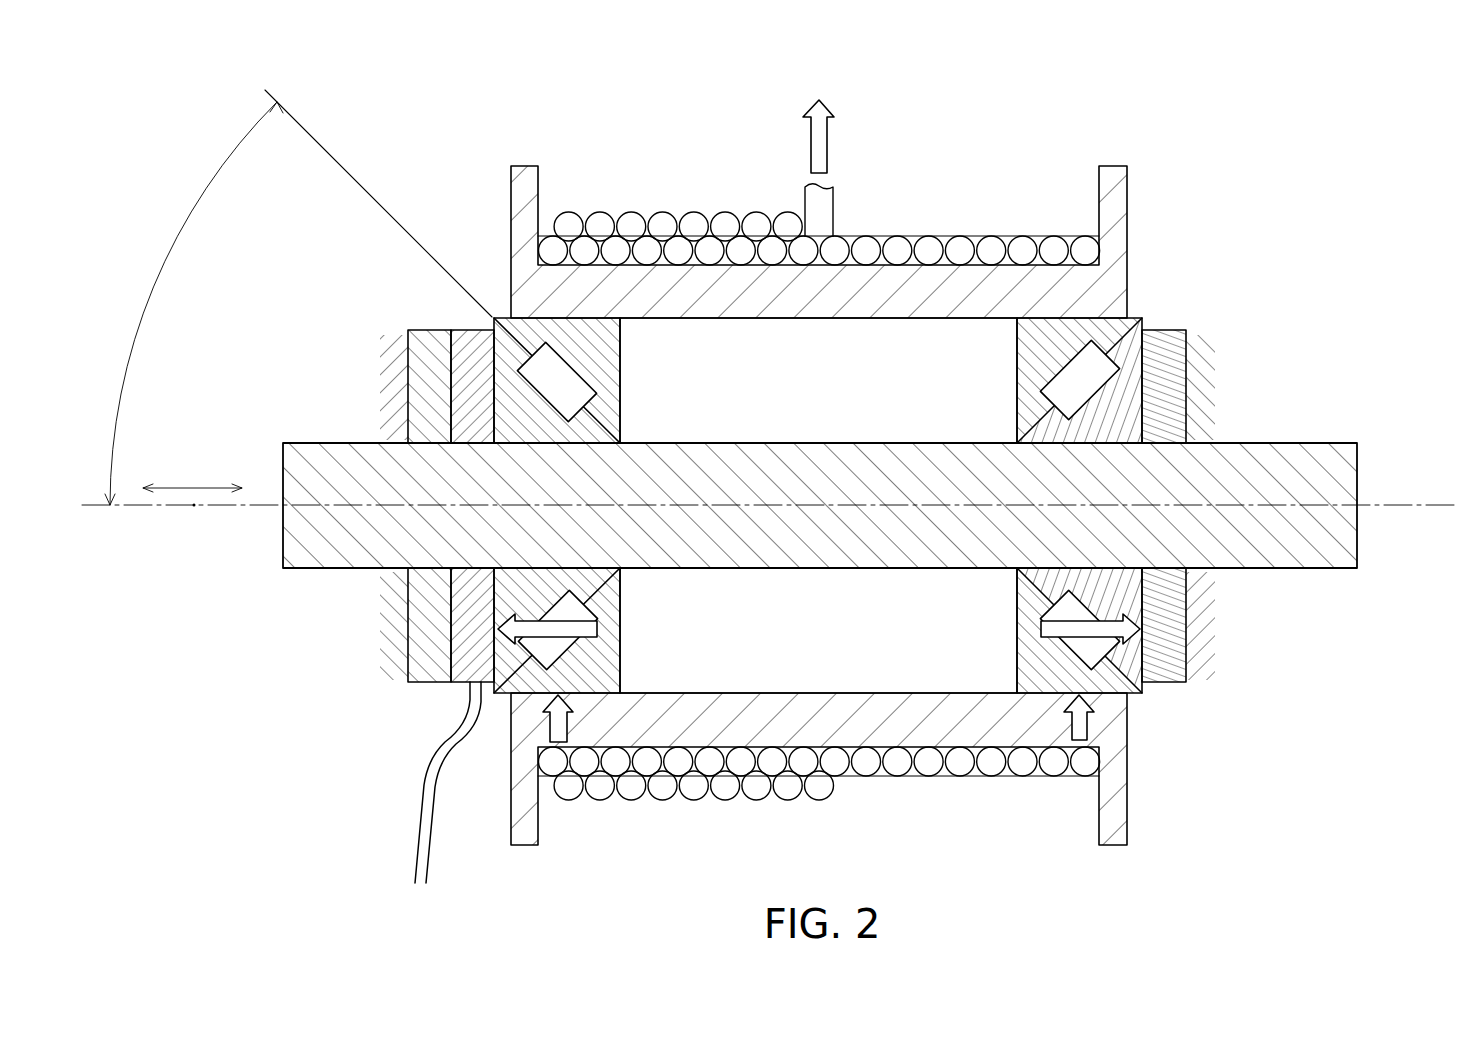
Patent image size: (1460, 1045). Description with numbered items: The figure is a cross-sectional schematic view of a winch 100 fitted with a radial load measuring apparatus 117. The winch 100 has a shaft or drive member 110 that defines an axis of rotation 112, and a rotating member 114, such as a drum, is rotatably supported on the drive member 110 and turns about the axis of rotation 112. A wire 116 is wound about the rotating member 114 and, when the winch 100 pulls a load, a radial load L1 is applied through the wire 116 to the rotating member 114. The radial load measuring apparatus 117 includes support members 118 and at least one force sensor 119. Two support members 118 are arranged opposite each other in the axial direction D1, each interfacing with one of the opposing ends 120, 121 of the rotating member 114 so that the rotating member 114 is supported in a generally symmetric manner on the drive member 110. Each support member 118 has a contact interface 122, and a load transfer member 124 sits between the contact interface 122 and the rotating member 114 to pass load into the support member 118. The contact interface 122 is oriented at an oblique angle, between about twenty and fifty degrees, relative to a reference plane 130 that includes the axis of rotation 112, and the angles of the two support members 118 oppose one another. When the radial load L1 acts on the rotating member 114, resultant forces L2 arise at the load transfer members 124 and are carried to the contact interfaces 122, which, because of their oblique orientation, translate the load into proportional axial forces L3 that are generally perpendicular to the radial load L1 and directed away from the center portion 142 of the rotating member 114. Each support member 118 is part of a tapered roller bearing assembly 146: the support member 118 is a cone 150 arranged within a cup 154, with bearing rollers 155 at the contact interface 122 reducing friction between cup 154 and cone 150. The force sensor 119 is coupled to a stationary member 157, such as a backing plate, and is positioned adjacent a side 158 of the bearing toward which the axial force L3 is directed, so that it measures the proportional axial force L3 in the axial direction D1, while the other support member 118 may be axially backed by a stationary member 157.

The winch 100 is at (768, 459).
The drive member 110 is at (1276, 443).
The axis of rotation 112 is at (1414, 505).
The rotating member 114 is at (869, 488).
The wire 116 is at (570, 222).
The radial load measuring apparatus 117 is at (1171, 308).
The support member 118 is at (768, 386).
The force sensor 119 is at (470, 340).
The end of the rotating member 120 is at (724, 436).
The end of the rotating member 121 is at (1137, 261).
The contact interface 122 is at (802, 473).
The load transfer member 124 is at (757, 380).
The reference plane 130 is at (194, 505).
The center portion 142 is at (825, 572).
The tapered roller bearing assembly 146 is at (660, 380).
The cone 150 is at (1020, 420).
The cup 154 is at (1020, 345).
The bearing rollers 155 is at (430, 370).
The stationary member 157 is at (427, 418).
The side of the cup 158 is at (497, 602).
The radial load L1 is at (829, 140).
The resultant forces L2 is at (550, 720).
The proportional axial forces L3 is at (438, 670).
The axial direction D1 is at (204, 488).